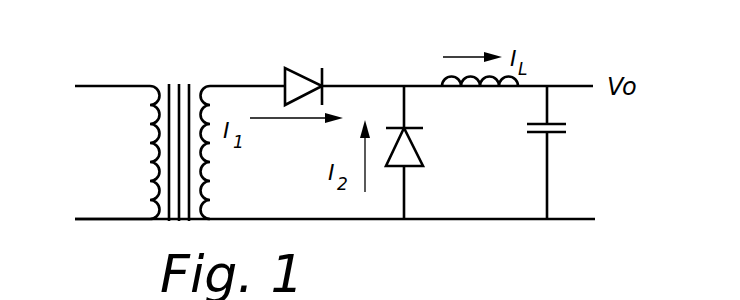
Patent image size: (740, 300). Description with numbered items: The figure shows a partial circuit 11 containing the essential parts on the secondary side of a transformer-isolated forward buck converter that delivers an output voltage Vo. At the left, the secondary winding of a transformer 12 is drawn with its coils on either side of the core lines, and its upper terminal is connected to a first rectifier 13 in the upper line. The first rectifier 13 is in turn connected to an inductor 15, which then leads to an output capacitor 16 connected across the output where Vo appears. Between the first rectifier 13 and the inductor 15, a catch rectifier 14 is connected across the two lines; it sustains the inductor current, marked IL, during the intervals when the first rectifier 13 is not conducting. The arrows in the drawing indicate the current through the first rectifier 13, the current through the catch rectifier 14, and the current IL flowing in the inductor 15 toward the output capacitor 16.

The partial circuit 11 is at (150, 28).
The transformer 12 is at (178, 75).
The first rectifier 13 is at (290, 60).
The catch rectifier 14 is at (425, 150).
The inductor 15 is at (430, 72).
The output capacitor 16 is at (573, 125).